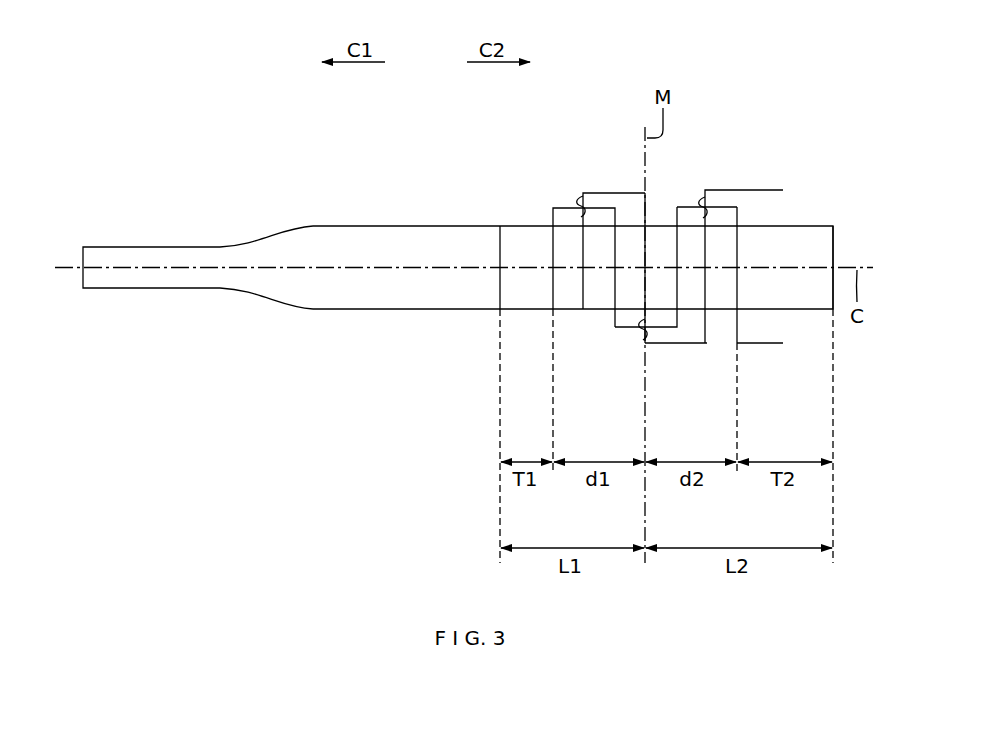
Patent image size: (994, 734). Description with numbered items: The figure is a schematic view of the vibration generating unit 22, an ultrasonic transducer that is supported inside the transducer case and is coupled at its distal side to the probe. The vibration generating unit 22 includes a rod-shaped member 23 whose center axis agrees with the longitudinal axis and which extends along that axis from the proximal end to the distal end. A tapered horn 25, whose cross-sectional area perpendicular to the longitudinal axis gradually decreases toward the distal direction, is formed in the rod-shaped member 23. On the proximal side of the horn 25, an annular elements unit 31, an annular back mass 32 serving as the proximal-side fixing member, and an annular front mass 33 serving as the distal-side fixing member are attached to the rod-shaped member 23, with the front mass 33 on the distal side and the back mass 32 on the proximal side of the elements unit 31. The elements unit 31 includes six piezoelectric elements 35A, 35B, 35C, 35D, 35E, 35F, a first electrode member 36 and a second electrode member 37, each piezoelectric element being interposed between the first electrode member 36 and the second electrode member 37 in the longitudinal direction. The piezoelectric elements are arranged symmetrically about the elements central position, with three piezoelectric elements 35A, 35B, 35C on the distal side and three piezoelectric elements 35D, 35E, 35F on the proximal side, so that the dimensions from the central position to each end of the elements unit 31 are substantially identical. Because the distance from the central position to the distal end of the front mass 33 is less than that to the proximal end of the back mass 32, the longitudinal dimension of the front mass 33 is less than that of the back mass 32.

The vibration generating unit 22 is at (541, 122).
The rod-shaped member 23 is at (364, 292).
The horn 25 is at (280, 245).
The elements unit 31 is at (657, 230).
The back mass 32 is at (812, 245).
The front mass 33 is at (525, 245).
The piezoelectric element 35A is at (568, 295).
The piezoelectric element 35B is at (602, 295).
The piezoelectric element 35C is at (630, 243).
The piezoelectric element 35D is at (662, 300).
The piezoelectric element 35E is at (690, 295).
The piezoelectric element 35F is at (718, 295).
The first electrode member 36 is at (757, 350).
The second electrode member 37 is at (755, 190).